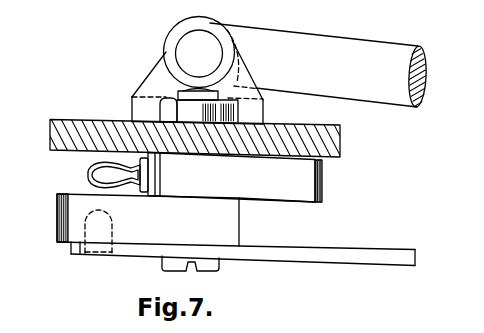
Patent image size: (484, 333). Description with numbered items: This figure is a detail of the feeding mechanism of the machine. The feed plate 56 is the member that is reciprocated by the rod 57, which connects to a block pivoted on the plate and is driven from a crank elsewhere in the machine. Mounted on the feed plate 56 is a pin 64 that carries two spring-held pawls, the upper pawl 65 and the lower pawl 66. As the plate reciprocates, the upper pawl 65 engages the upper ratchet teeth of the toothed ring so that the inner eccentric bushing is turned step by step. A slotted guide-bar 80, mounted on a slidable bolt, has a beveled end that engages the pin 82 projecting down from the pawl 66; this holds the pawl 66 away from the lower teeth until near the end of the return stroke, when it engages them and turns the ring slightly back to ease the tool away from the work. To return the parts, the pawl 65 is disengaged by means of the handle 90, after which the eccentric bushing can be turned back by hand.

The feed plate 56 is at (55, 136).
The rod 57 is at (321, 67).
The pin 64 is at (157, 70).
The upper pawl 65 is at (235, 178).
The lower pawl 66 is at (186, 232).
The guide-bar 80 is at (331, 254).
The pin 82 is at (98, 228).
The handle 90 is at (85, 174).